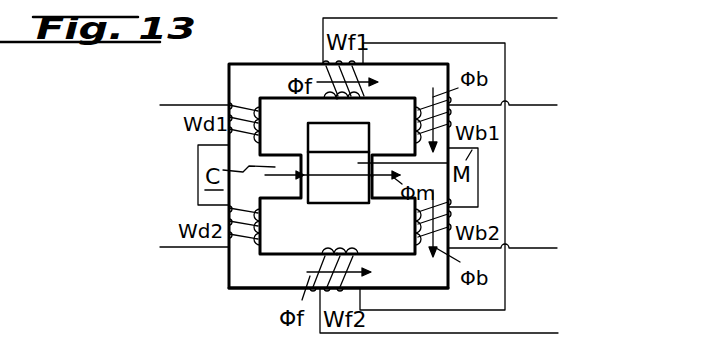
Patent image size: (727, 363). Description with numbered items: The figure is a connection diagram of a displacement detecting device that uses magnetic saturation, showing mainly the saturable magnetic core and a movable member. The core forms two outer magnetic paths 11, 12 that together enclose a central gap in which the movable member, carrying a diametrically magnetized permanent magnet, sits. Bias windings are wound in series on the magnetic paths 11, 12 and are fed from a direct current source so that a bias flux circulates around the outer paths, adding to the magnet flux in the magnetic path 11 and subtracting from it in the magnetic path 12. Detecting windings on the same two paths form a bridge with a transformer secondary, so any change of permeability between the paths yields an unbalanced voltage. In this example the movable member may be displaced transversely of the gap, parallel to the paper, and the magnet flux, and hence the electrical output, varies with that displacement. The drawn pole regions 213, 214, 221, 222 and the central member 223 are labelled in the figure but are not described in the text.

The magnetic path 11 is at (257, 67).
The magnetic path 12 is at (255, 289).
The lower-left pole piece of core 213 is at (286, 200).
The upper-right pole piece of core 214 is at (401, 153).
The upper-left pole piece of core 221 is at (306, 143).
The lower-right pole piece of core 222 is at (352, 204).
The permanent magnet rotor 223 is at (333, 206).